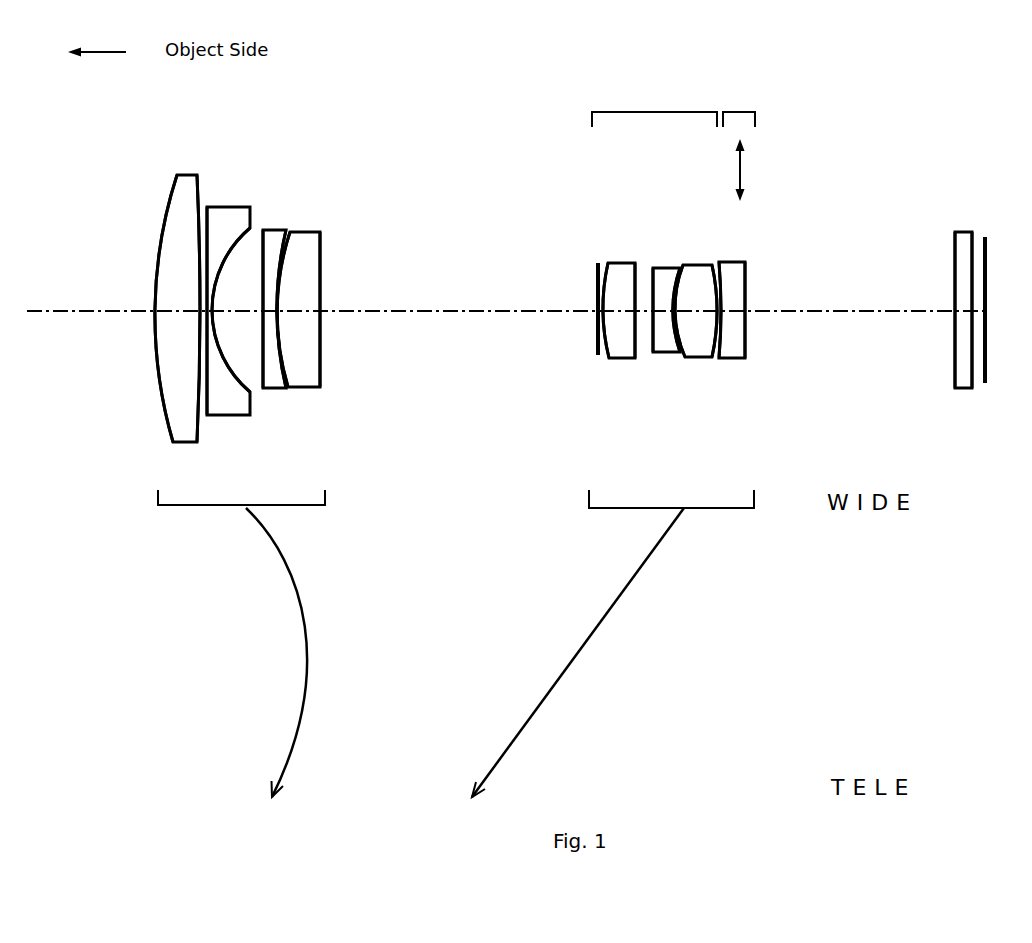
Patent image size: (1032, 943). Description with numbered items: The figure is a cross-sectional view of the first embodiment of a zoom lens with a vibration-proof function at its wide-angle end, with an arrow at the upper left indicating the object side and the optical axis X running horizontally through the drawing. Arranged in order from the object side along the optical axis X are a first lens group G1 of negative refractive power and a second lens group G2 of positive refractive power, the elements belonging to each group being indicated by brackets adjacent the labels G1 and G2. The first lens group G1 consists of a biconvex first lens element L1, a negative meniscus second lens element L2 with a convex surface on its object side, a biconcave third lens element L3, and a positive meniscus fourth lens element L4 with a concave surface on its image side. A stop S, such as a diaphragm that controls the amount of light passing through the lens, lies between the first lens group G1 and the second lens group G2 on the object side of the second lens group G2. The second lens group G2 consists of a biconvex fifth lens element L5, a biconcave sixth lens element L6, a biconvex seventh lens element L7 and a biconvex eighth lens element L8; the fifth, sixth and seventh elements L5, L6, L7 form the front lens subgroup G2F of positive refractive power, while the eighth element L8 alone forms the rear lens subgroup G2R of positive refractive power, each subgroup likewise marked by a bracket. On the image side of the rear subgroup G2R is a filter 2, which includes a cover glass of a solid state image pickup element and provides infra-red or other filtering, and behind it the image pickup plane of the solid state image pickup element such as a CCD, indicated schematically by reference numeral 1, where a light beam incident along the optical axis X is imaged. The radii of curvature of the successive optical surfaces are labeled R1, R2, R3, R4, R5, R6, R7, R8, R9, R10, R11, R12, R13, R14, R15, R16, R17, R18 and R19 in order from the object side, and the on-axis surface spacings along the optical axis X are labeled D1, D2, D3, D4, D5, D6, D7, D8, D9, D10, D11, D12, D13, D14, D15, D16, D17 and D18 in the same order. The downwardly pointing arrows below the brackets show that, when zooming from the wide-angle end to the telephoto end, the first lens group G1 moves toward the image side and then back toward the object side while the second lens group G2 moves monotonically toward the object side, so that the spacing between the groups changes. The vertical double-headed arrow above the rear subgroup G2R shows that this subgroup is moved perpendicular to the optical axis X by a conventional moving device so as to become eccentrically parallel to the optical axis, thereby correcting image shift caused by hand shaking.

The image pickup plane of solid state image pickup element 1 is at (986, 240).
The filter 2 is at (958, 232).
The stop S is at (597, 262).
The optical axis X is at (65, 314).
The first lens group G1 is at (241, 516).
The second lens group G2 is at (671, 516).
The first lens subgroup G2F is at (654, 102).
The second lens subgroup G2R is at (738, 102).
The first lens element L1 is at (190, 174).
The second lens element L2 is at (244, 205).
The third lens element L3 is at (270, 229).
The fourth lens element L4 is at (310, 231).
The fifth lens element L5 is at (618, 262).
The sixth lens element L6 is at (665, 267).
The seventh lens element L7 is at (697, 264).
The eighth lens element L8 is at (732, 261).
The radius of curvature of first surface R1 is at (164, 232).
The radius of curvature of second surface R2 is at (199, 177).
The radius of curvature of third surface R3 is at (209, 212).
The radius of curvature of fourth surface R4 is at (228, 283).
The radius of curvature of fifth surface R5 is at (262, 300).
The radius of curvature of sixth surface R6 is at (284, 231).
The radius of curvature of seventh surface R7 is at (291, 234).
The radius of curvature of eighth surface R8 is at (321, 268).
The radius of curvature of ninth surface R9 is at (596, 282).
The radius of curvature of tenth surface R10 is at (606, 262).
The radius of curvature of eleventh surface R11 is at (634, 262).
The radius of curvature of twelfth surface R12 is at (653, 268).
The radius of curvature of thirteenth surface R13 is at (680, 266).
The radius of curvature of fourteenth surface R14 is at (684, 266).
The radius of curvature of fifteenth surface R15 is at (712, 264).
The radius of curvature of sixteenth surface R16 is at (721, 263).
The radius of curvature of seventeenth surface R17 is at (746, 300).
The radius of curvature of eighteenth surface R18 is at (955, 265).
The radius of curvature of nineteenth surface R19 is at (972, 233).
The first on-axis surface spacing D1 is at (177, 313).
The second on-axis surface spacing D2 is at (203, 313).
The third on-axis surface spacing D3 is at (212, 313).
The fourth on-axis surface spacing D4 is at (240, 313).
The fifth on-axis surface spacing D5 is at (270, 313).
The sixth on-axis surface spacing D6 is at (279, 313).
The seventh on-axis surface spacing D7 is at (300, 313).
The eighth on-axis surface spacing D8 is at (427, 313).
The ninth on-axis surface spacing D9 is at (601, 313).
The tenth on-axis surface spacing D10 is at (619, 313).
The eleventh on-axis surface spacing D11 is at (644, 313).
The twelfth on-axis surface spacing D12 is at (663, 313).
The thirteenth on-axis surface spacing D13 is at (675, 313).
The fourteenth on-axis surface spacing D14 is at (697, 313).
The fifteenth on-axis surface spacing D15 is at (718, 313).
The sixteenth on-axis surface spacing D16 is at (731, 313).
The seventeenth on-axis surface spacing D17 is at (878, 313).
The eighteenth on-axis surface spacing D18 is at (963, 313).